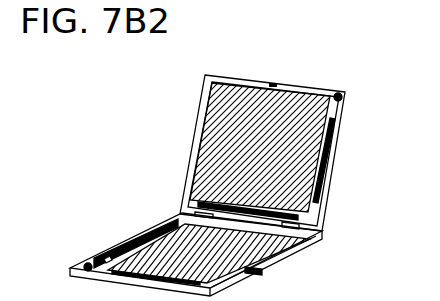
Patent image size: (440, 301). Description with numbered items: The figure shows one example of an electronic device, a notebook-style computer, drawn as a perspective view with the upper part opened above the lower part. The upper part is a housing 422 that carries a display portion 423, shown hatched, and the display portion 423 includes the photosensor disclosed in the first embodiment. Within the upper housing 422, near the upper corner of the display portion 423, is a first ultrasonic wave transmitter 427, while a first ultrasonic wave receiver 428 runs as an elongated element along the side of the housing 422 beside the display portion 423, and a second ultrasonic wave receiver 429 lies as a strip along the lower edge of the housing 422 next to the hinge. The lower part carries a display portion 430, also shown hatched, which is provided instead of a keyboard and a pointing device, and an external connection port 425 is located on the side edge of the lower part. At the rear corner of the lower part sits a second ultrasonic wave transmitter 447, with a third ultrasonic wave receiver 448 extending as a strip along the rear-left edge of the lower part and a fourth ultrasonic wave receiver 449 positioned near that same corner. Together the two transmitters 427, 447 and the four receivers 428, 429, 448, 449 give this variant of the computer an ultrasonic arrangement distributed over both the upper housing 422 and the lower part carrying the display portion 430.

The housing 422 is at (204, 106).
The display portion 423 is at (223, 165).
The first ultrasonic wave transmitter 427 is at (344, 97).
The first ultrasonic wave receiver 428 is at (333, 163).
The second ultrasonic wave receiver 429 is at (300, 218).
The display portion 430 is at (197, 247).
The external connection port 425 is at (264, 271).
The third ultrasonic wave receiver 448 is at (137, 237).
The fourth ultrasonic wave receiver 449 is at (108, 260).
The second ultrasonic wave transmitter 447 is at (85, 263).